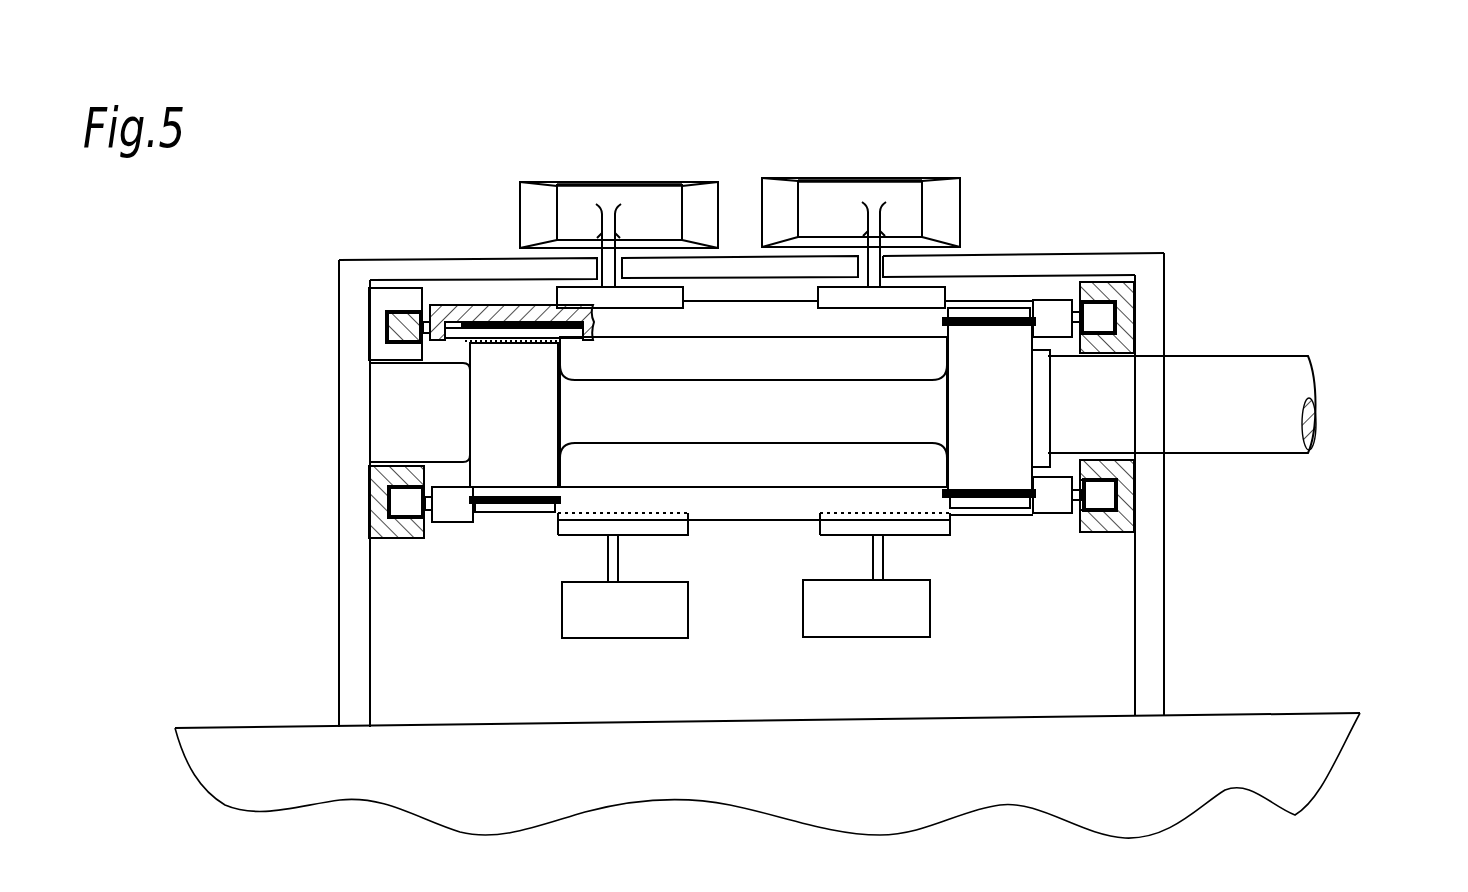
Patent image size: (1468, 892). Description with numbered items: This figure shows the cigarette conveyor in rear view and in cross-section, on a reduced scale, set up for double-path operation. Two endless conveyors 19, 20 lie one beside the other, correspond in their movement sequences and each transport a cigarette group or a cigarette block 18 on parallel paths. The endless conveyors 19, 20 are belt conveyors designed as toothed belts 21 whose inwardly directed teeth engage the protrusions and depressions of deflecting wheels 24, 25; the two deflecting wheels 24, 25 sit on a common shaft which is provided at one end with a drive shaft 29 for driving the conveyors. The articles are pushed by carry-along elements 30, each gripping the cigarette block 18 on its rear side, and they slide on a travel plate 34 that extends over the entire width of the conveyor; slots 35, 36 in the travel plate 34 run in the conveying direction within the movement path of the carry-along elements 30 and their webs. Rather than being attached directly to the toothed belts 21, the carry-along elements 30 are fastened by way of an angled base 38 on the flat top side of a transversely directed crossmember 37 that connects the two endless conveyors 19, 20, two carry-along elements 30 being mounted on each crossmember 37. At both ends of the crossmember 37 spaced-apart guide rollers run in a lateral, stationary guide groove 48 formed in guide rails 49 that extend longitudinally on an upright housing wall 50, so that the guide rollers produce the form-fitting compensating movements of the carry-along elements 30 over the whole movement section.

The cigarette block 18 is at (520, 213).
The endless conveyor 19 is at (744, 437).
The endless conveyor 20 is at (1040, 277).
The toothed belt 21 is at (527, 503).
The deflecting wheel 24 is at (478, 417).
The deflecting wheel 25 is at (1017, 400).
The drive shaft 29 is at (1262, 395).
The carry-along element 30 is at (637, 207).
The travel plate 34 is at (368, 267).
The slot 35 is at (600, 238).
The slot 36 is at (884, 262).
The crossmember 37 is at (738, 366).
The angled base 38 is at (658, 297).
The guide groove 48 is at (367, 323).
The guide rail 49 is at (1120, 282).
The housing wall 50 is at (355, 627).